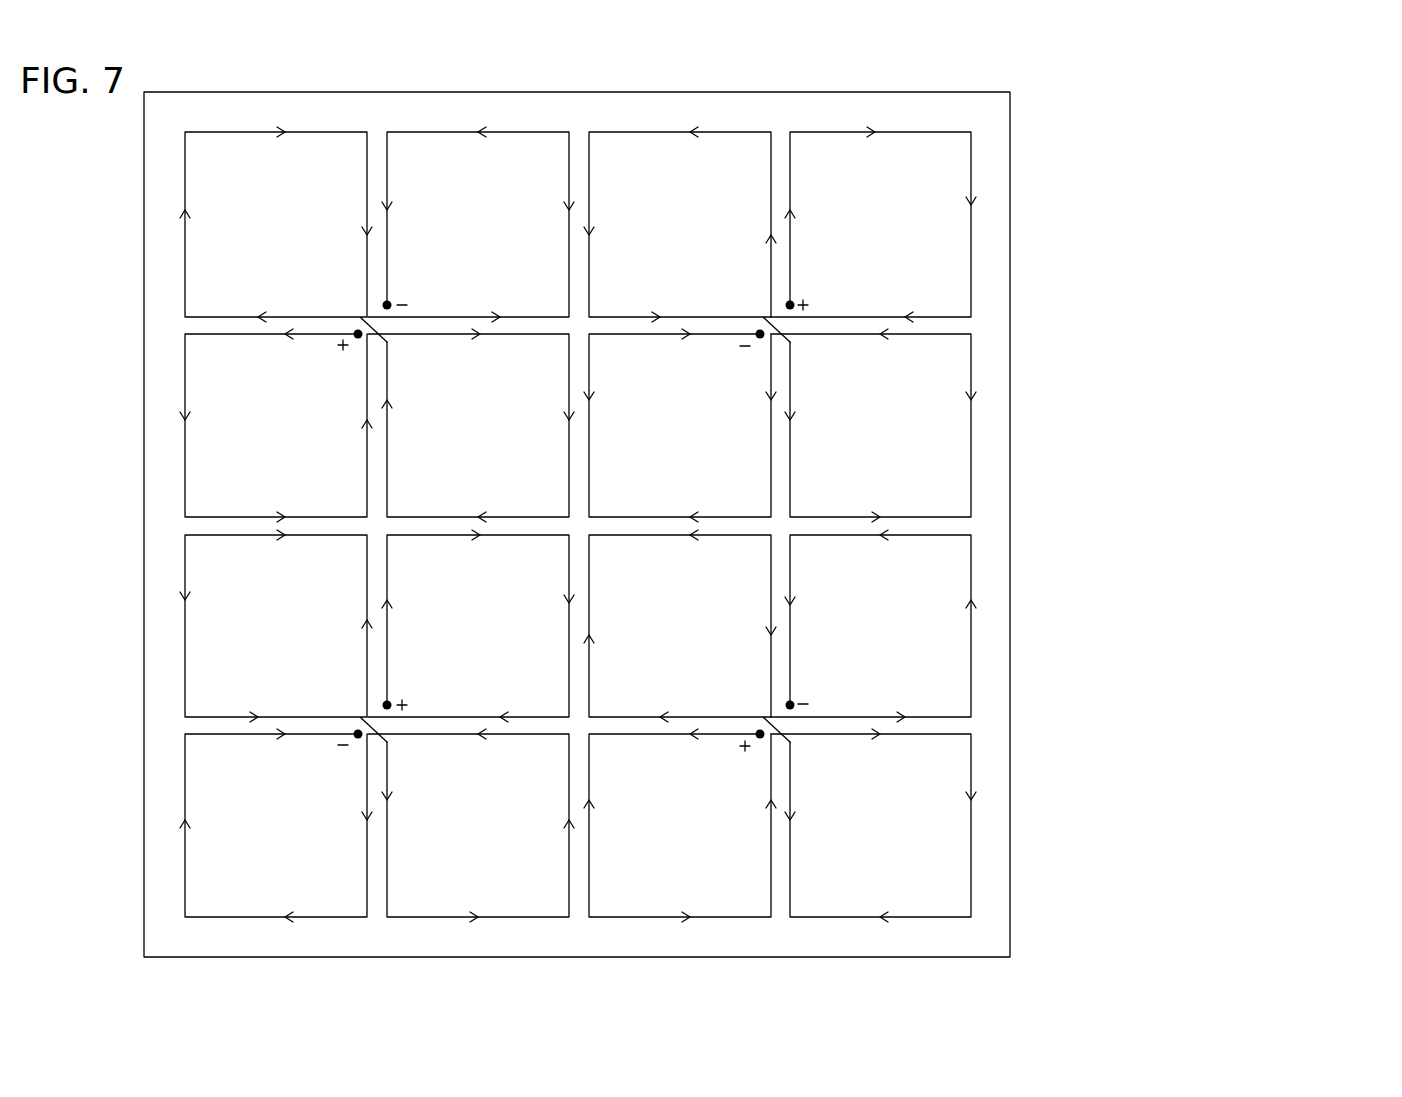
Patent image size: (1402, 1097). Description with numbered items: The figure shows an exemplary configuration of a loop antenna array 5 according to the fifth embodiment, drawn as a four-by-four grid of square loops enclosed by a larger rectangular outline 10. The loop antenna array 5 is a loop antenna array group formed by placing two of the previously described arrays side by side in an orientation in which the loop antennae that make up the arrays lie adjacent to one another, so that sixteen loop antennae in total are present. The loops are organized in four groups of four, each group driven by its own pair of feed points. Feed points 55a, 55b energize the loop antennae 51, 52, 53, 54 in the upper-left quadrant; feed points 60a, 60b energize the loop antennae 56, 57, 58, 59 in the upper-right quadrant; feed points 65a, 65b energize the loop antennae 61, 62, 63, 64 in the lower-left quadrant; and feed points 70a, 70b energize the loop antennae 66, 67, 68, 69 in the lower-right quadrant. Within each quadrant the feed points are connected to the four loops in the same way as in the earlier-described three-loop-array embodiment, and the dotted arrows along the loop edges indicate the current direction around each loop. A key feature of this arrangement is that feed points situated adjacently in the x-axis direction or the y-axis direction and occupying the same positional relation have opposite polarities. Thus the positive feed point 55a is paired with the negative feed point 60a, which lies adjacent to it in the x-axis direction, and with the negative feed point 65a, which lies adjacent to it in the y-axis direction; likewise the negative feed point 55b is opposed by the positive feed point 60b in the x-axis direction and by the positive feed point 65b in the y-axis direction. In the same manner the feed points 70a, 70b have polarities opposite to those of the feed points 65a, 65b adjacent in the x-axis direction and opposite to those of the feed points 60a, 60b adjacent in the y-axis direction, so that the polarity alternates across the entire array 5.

The loop antenna array 5 is at (1022, 178).
The substrate 10 is at (1011, 292).
The loop antenna 51 is at (187, 441).
The loop antenna 52 is at (389, 441).
The loop antenna 53 is at (187, 232).
The loop antenna 54 is at (389, 232).
The feed point 55a is at (358, 339).
The feed point 55b is at (389, 301).
The loop antenna 56 is at (591, 465).
The loop antenna 57 is at (792, 465).
The loop antenna 58 is at (591, 252).
The loop antenna 59 is at (792, 252).
The feed point 60a is at (760, 339).
The feed point 60b is at (792, 301).
The loop antenna 61 is at (187, 842).
The loop antenna 62 is at (389, 842).
The loop antenna 63 is at (187, 632).
The loop antenna 64 is at (389, 632).
The feed point 65a is at (358, 739).
The feed point 65b is at (389, 701).
The loop antenna 66 is at (591, 862).
The loop antenna 67 is at (792, 862).
The loop antenna 68 is at (591, 652).
The loop antenna 69 is at (792, 652).
The feed point 70a is at (760, 739).
The feed point 70b is at (792, 701).